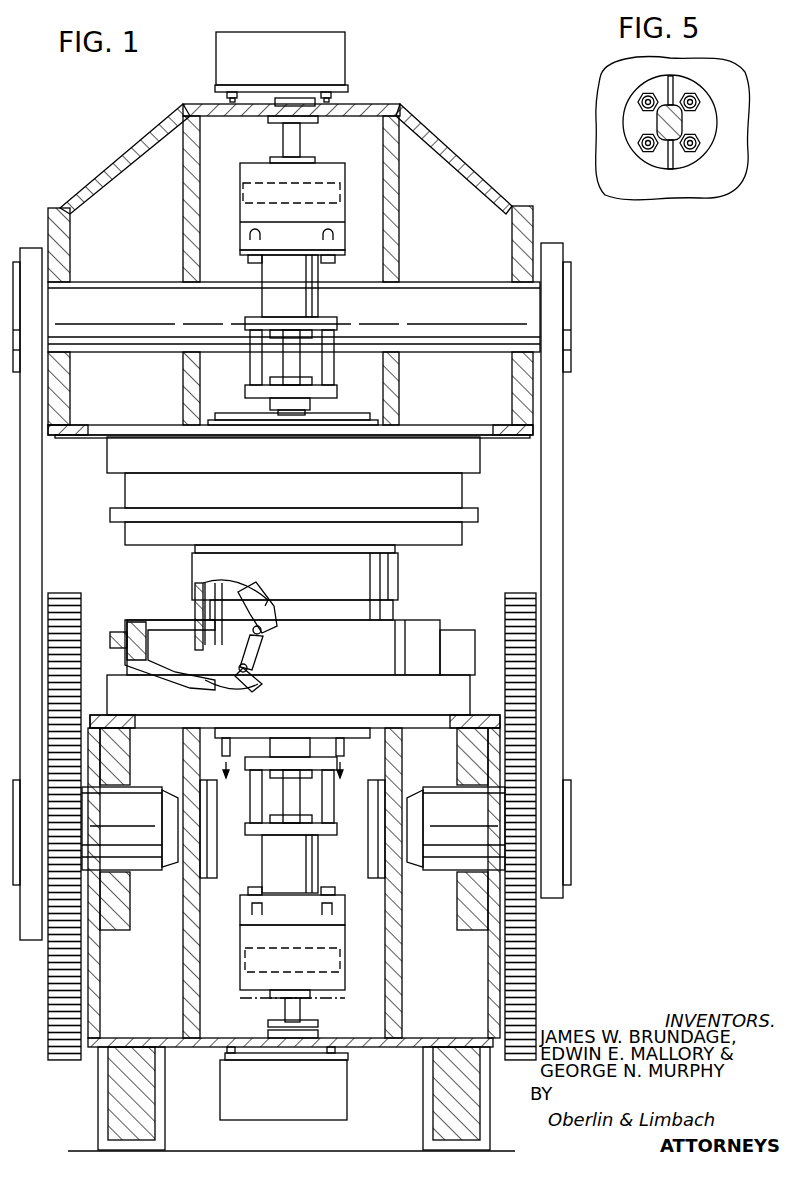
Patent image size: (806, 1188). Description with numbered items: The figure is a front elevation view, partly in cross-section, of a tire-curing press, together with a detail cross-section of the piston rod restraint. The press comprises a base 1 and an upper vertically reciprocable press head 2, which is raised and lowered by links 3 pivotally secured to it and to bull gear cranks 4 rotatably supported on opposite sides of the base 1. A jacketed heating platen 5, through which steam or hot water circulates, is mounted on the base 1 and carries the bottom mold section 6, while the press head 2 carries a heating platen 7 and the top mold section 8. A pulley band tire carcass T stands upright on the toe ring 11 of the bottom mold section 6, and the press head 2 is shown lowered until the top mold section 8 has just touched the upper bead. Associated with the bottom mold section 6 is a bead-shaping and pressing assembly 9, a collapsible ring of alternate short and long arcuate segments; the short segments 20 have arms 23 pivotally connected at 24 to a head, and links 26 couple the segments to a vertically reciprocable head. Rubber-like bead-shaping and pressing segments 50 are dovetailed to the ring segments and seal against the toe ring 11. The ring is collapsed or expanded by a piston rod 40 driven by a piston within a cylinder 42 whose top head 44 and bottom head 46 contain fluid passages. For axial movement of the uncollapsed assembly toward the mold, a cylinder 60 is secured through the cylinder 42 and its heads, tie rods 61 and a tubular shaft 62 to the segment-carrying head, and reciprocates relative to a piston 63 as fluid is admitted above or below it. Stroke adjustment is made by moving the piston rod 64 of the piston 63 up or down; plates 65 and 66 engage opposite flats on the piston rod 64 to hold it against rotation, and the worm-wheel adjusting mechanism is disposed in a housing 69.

In FIG. 1, the base 1 is at (420, 1102).
In FIG. 5, the base 1 is at (722, 185).
In FIG. 1, the press head 2 is at (482, 167).
In FIG. 1, the links 3 is at (42, 486).
In FIG. 1, the bull gear cranks 4 is at (46, 1005).
In FIG. 1, the heating platen 5 is at (369, 706).
In FIG. 1, the bottom mold section 6 is at (369, 670).
In FIG. 1, the heating platen 7 is at (390, 470).
In FIG. 1, the top mold section 8 is at (390, 502).
In FIG. 1, the bead-shaping and pressing assembly 9 is at (258, 598).
In FIG. 1, the toe ring 11 is at (215, 648).
In FIG. 1, the short arcuate segments 20 is at (258, 592).
In FIG. 1, the arms 23 is at (252, 648).
In FIG. 1, the pivot connection 24 is at (250, 676).
In FIG. 1, the links 26 is at (265, 635).
In FIG. 1, the piston rod 40 is at (292, 357).
In FIG. 1, the cylinder 42 is at (318, 290).
In FIG. 1, the top head 44 is at (325, 325).
In FIG. 1, the bottom head 46 is at (340, 235).
In FIG. 1, the short arcuate bead-shaping and pressing segments 50 is at (200, 608).
In FIG. 1, the cylinder 60 is at (240, 214).
In FIG. 1, the tie rods 61 is at (248, 370).
In FIG. 1, the tubular shaft 62 is at (305, 404).
In FIG. 1, the piston 63 is at (340, 188).
In FIG. 1, the piston rod 64 is at (300, 144).
In FIG. 5, the piston rod 64 is at (688, 132).
In FIG. 1, the plate 65 is at (300, 100).
In FIG. 5, the plate 65 is at (707, 120).
In FIG. 1, the plate 66 is at (280, 100).
In FIG. 5, the plate 66 is at (636, 152).
In FIG. 1, the housing 69 is at (340, 60).
In FIG. 1, the pulley band tire carcass T is at (398, 582).